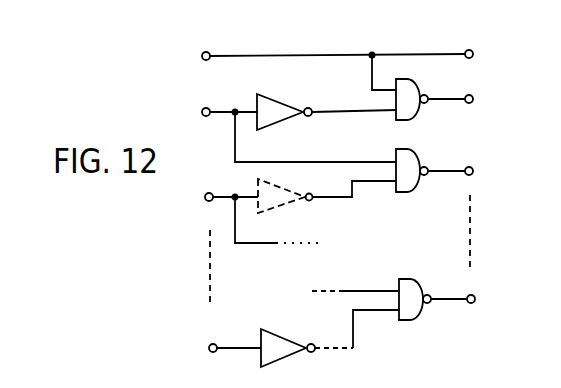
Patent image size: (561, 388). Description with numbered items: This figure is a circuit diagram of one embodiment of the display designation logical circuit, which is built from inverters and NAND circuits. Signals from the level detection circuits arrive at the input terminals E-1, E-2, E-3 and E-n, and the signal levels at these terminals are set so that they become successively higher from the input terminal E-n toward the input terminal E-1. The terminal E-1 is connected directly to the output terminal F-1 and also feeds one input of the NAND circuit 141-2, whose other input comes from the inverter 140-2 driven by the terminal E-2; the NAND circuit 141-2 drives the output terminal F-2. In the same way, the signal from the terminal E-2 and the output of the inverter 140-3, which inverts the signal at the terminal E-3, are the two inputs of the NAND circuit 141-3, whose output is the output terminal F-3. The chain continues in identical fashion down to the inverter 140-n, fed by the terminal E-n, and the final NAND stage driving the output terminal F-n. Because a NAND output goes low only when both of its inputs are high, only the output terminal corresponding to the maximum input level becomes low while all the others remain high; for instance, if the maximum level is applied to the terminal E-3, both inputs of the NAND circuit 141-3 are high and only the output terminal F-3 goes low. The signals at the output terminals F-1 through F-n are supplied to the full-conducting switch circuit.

The inverter 140-2 is at (279, 102).
The NAND circuit 141-2 is at (403, 121).
The inverter 140-3 is at (281, 211).
The NAND circuit 141-3 is at (404, 193).
The inverter 140-n is at (268, 310).
The input terminal E-1 is at (202, 54).
The input terminal E-2 is at (202, 102).
The input terminal E-3 is at (202, 194).
The input terminal E-n is at (202, 346).
The output terminal F-1 is at (471, 51).
The output terminal F-2 is at (471, 96).
The output terminal F-3 is at (471, 170).
The output terminal F-n is at (477, 279).